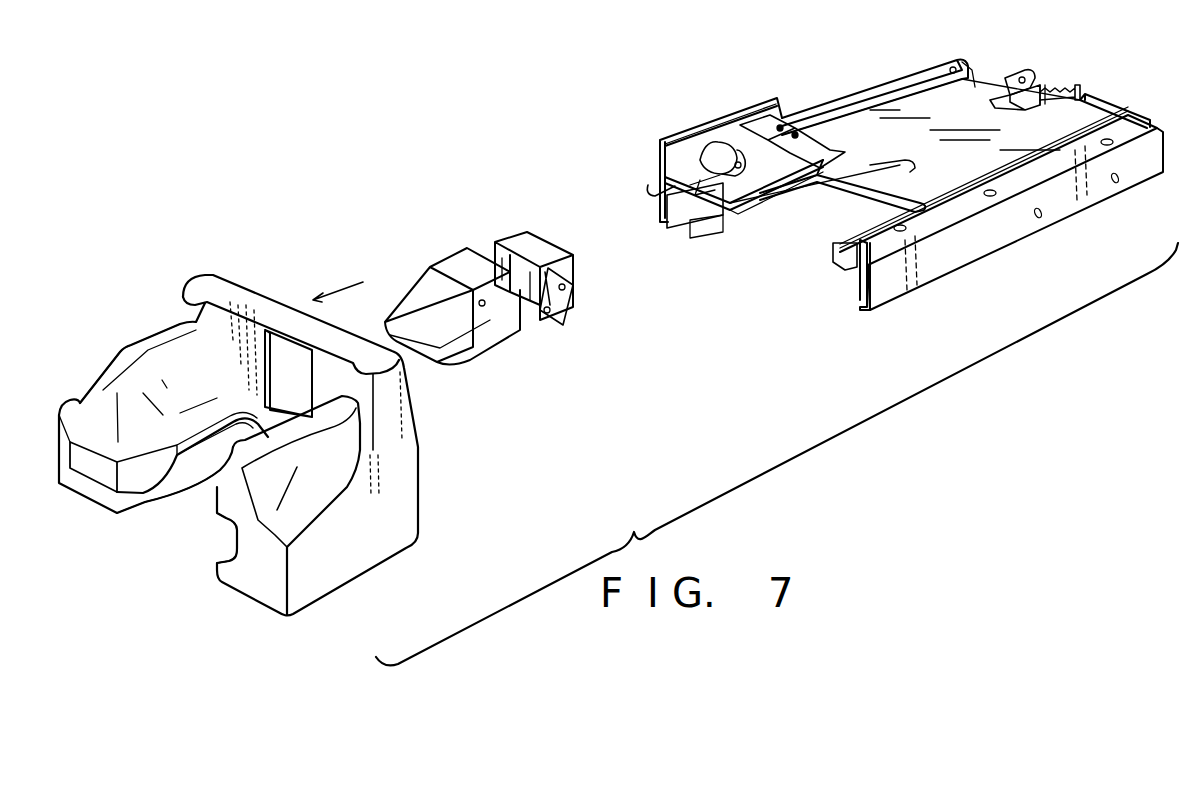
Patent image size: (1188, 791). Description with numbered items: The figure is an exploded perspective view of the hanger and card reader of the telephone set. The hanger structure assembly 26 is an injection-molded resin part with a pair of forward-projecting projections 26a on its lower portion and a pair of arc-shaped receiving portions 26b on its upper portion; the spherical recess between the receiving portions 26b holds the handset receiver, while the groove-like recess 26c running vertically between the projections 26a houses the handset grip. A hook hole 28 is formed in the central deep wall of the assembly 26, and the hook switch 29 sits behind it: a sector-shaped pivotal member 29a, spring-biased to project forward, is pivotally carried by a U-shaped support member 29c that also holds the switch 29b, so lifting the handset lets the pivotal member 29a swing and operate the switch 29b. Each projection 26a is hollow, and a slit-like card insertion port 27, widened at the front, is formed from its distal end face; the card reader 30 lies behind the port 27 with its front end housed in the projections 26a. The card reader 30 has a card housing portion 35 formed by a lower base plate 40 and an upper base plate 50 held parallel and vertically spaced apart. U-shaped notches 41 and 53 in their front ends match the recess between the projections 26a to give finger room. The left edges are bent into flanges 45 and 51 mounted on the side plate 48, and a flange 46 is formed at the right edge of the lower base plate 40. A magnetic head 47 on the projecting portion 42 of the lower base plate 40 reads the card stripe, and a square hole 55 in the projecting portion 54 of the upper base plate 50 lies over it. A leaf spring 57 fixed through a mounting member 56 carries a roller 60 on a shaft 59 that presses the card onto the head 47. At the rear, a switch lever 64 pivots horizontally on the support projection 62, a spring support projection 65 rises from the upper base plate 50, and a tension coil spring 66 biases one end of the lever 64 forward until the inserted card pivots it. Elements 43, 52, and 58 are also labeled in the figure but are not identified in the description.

The hanger structure assembly 26 is at (345, 603).
The projections 26a is at (75, 407).
The receiving portions 26b is at (152, 347).
The groove-like recess 26c is at (141, 502).
The card insertion port 27 is at (108, 478).
The hook hole 28 is at (258, 360).
The hook switch 29 is at (468, 269).
The pivotal member 29a is at (418, 298).
The switch 29b is at (565, 310).
The support member 29c is at (448, 263).
The card reader 30 is at (892, 200).
The card housing portion 35 is at (887, 233).
The lower base plate 40 is at (857, 203).
The U-shaped notch 41 is at (820, 193).
The projecting portion 42 is at (763, 203).
The end lip 43 is at (1120, 115).
The flange 45 is at (677, 217).
The flange 46 is at (977, 250).
The magnetic head 47 is at (710, 230).
The side plate 48 is at (660, 162).
The upper base plate 50 is at (975, 87).
The flange 51 is at (843, 107).
The front plate 52 is at (1040, 170).
The U-shaped notch 53 is at (877, 172).
The projecting portion 54 is at (777, 180).
The square hole 55 is at (667, 180).
The mounting member 56 is at (872, 141).
The leaf spring 57 is at (757, 143).
The roller 58 is at (712, 160).
The shaft 59 is at (740, 173).
The roller 60 is at (700, 162).
The support projection 62 is at (1013, 82).
The switch lever 64 is at (1060, 102).
The spring support projection 65 is at (1033, 87).
The tension coil spring 66 is at (1053, 92).